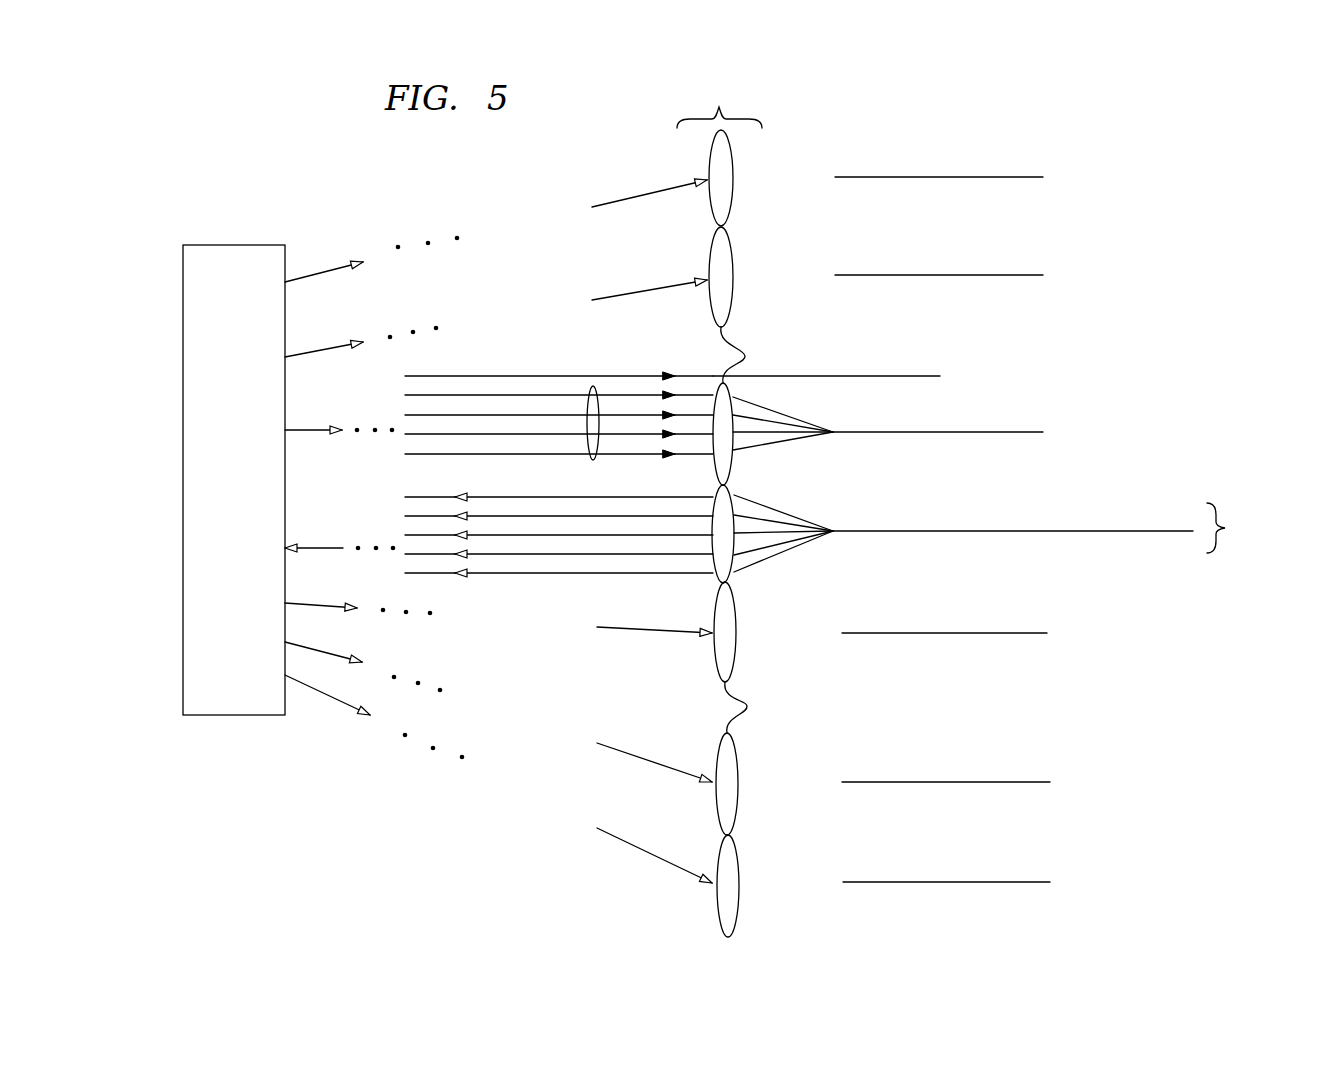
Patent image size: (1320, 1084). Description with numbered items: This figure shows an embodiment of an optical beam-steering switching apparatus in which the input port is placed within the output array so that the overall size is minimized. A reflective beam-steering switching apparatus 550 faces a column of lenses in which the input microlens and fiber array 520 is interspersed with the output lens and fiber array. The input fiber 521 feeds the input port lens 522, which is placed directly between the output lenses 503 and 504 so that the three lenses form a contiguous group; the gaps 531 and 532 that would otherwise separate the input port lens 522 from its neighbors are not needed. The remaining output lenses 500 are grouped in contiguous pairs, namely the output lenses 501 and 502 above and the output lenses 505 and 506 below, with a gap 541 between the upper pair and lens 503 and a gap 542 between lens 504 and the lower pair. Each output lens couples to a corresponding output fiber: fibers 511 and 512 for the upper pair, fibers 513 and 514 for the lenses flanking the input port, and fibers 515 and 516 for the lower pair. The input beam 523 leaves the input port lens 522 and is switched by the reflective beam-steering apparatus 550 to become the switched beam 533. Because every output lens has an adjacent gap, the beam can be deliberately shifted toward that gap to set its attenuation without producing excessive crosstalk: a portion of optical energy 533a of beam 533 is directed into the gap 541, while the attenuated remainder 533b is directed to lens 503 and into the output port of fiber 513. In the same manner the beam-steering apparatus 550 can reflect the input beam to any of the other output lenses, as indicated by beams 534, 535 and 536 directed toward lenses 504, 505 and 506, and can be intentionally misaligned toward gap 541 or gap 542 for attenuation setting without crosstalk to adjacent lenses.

The output lenses 500 is at (719, 106).
The output lens 501 is at (733, 178).
The output lens 502 is at (733, 278).
The output lens 503 is at (735, 392).
The output lens 504 is at (737, 601).
The output lens 505 is at (738, 760).
The output lens 506 is at (738, 855).
The output fiber 511 is at (912, 177).
The output fiber 512 is at (912, 275).
The output fiber 513 is at (912, 432).
The output fiber 514 is at (918, 633).
The output fiber 515 is at (918, 782).
The output fiber 516 is at (918, 882).
The input microlens and fiber array 520 is at (1236, 528).
The input fiber 521 is at (918, 531).
The input port lens 522 is at (720, 487).
The input beam 523 is at (559, 521).
The gap 531 is at (320, 273).
The gap 532 is at (320, 350).
The switched beam 533 is at (559, 402).
The portion of optical energy 533a is at (822, 373).
The attenuated remainder 533b is at (593, 460).
The beam 534 is at (315, 605).
The beam 535 is at (320, 651).
The beam 536 is at (320, 692).
The gap 541 is at (752, 355).
The gap 542 is at (756, 707).
The reflective beam-steering switching apparatus 550 is at (233, 245).